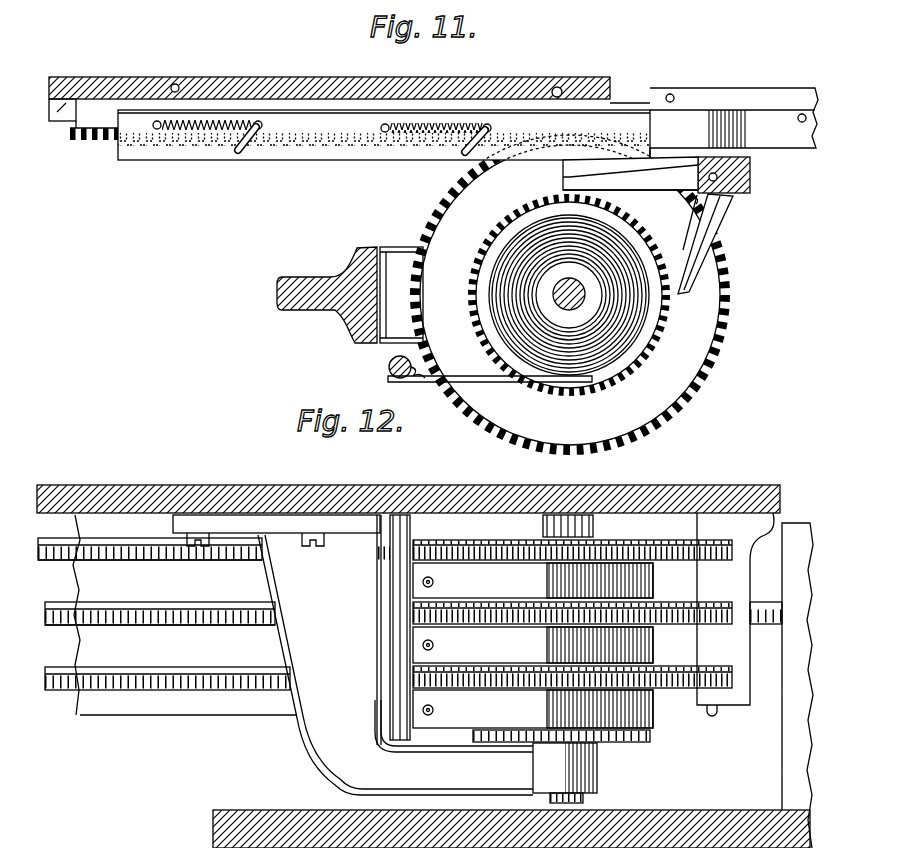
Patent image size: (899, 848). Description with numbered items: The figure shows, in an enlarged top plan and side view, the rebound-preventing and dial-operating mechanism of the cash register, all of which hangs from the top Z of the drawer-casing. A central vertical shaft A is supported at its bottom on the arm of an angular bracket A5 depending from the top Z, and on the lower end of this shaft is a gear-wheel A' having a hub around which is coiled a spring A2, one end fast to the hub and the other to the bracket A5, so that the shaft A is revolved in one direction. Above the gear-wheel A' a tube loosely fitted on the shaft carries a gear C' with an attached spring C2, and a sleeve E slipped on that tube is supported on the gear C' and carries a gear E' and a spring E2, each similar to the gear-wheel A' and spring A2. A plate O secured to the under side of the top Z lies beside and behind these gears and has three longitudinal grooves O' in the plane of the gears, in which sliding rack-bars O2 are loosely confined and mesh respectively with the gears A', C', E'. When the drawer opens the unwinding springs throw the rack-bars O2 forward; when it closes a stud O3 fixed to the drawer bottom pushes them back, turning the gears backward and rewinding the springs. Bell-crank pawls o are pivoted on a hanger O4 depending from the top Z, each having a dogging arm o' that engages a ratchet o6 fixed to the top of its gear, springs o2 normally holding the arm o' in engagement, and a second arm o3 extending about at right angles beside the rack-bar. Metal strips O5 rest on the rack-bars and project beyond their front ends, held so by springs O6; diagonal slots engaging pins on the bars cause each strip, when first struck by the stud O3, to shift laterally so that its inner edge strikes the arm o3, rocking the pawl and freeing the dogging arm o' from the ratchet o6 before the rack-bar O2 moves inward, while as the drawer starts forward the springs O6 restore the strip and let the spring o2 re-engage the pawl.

In FIG. 11, the plate O is at (349, 79).
In FIG. 12, the plate O is at (185, 615).
In FIG. 11, the longitudinal grooves O' is at (81, 125).
In FIG. 11, the sliding rack-bars O2 is at (91, 118).
In FIG. 12, the sliding rack-bars O2 is at (123, 556).
In FIG. 11, the stud O3 is at (734, 124).
In FIG. 12, the stud O3 is at (794, 720).
In FIG. 11, the hanger O4 is at (238, 148).
In FIG. 12, the hanger O4 is at (732, 592).
In FIG. 11, the metal strips O5 is at (264, 125).
In FIG. 12, the metal strips O5 is at (127, 536).
In FIG. 11, the springs O6 is at (168, 128).
In FIG. 11, the bell-crank pawls o is at (630, 173).
In FIG. 12, the bell-crank pawls o is at (580, 603).
In FIG. 11, the dogging arm o' is at (685, 224).
In FIG. 11, the springs o2 is at (723, 221).
In FIG. 11, the pawl arm o3 is at (620, 186).
In FIG. 11, the ratchet o6 is at (657, 328).
In FIG. 12, the ratchet o6 is at (650, 544).
In FIG. 11, the central vertical shaft A is at (558, 294).
In FIG. 12, the central vertical shaft A is at (585, 776).
In FIG. 11, the gear-wheel A' is at (570, 295).
In FIG. 12, the gear-wheel A' is at (563, 712).
In FIG. 11, the spring A2 is at (510, 379).
In FIG. 12, the spring A2 is at (533, 709).
In FIG. 11, the angular bracket A5 is at (325, 337).
In FIG. 12, the angular bracket A5 is at (335, 639).
In FIG. 12, the top of the drawer-casing Z is at (192, 486).
In FIG. 12, the sleeve E is at (509, 627).
In FIG. 12, the gear E' is at (575, 575).
In FIG. 12, the spring E2 is at (533, 581).
In FIG. 12, the gear C' is at (570, 641).
In FIG. 12, the spring C2 is at (533, 645).